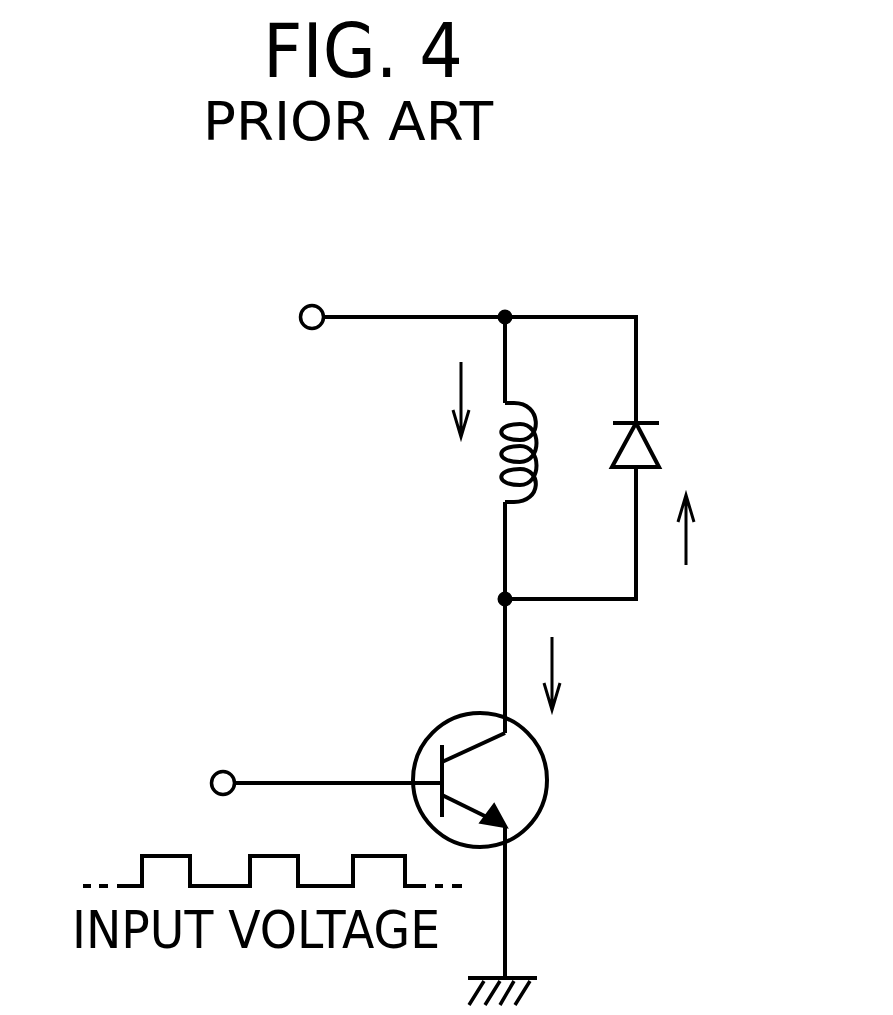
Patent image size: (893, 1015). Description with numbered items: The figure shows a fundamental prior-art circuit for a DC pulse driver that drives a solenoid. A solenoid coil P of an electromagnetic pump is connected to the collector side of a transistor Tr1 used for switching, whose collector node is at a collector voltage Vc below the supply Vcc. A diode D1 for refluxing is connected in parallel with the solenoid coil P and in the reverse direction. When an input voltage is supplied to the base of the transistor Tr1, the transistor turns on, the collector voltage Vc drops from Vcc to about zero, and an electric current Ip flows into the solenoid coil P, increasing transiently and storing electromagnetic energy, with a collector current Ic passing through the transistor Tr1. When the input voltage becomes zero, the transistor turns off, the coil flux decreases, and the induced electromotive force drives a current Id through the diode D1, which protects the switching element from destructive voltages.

The supply voltage Vcc is at (271, 284).
The solenoid coil P is at (502, 466).
The electric current Ip is at (419, 399).
The diode for refluxing D1 is at (660, 450).
The current Id is at (704, 566).
The collector voltage Vc is at (445, 623).
The collector current Ic is at (579, 673).
The transistor for switching Tr1 is at (548, 797).